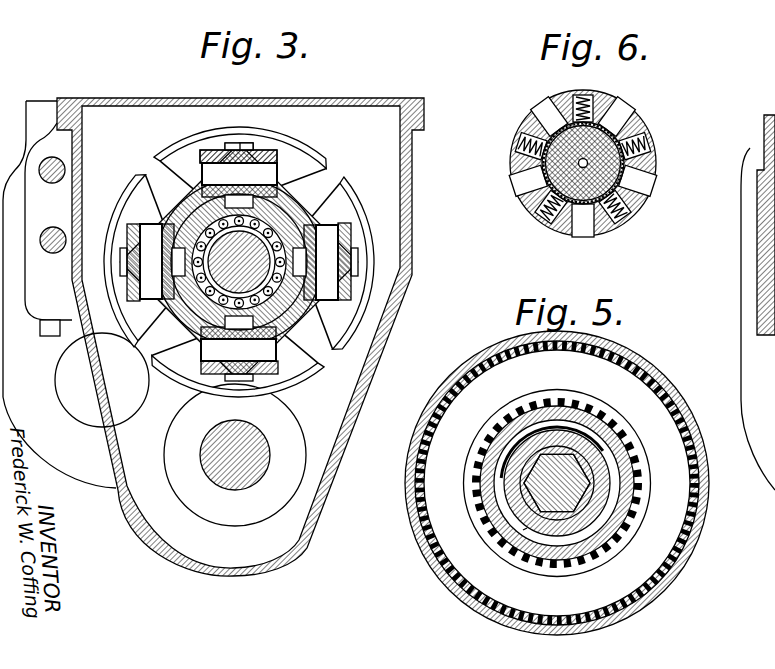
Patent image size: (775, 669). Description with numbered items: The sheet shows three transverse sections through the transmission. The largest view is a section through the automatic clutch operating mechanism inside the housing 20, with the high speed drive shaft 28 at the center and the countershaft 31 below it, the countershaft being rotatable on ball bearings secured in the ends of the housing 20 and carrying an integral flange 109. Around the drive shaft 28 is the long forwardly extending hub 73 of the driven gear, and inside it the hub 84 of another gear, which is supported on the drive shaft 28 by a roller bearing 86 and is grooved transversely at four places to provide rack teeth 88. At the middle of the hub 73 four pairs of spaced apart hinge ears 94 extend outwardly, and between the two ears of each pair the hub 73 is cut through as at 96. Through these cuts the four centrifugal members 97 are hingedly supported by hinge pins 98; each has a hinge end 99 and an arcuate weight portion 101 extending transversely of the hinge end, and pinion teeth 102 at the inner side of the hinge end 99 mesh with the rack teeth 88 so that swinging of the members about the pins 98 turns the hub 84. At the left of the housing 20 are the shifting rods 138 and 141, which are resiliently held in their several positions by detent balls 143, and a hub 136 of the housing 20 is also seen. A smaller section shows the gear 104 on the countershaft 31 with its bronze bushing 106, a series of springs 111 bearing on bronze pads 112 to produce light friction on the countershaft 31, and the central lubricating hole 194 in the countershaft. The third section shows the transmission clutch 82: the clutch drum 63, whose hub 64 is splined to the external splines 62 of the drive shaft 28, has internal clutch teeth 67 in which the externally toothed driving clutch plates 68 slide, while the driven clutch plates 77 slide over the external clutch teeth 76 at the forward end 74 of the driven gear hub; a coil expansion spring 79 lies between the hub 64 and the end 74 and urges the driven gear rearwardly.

In FIG. 3, the housing 20 is at (415, 155).
In FIG. 3, the high speed drive shaft 28 is at (270, 173).
In FIG. 5, the high speed drive shaft 28 is at (600, 483).
In FIG. 3, the countershaft 31 is at (255, 442).
In FIG. 6, the countershaft 31 is at (608, 173).
In FIG. 3, the hub of the driven gear 73 is at (172, 312).
In FIG. 3, the hub of gear 83 84 is at (283, 345).
In FIG. 3, the roller bearing 86 is at (203, 197).
In FIG. 3, the rack teeth 88 is at (172, 222).
In FIG. 3, the hinge ears 94 is at (212, 150).
In FIG. 3, the cut 96 is at (198, 334).
In FIG. 3, the centrifugal member 97 is at (250, 143).
In FIG. 3, the hinge pin 98 is at (285, 166).
In FIG. 3, the hinge end 99 is at (236, 143).
In FIG. 3, the arcuate weight portion 101 is at (175, 156).
In FIG. 3, the pinion teeth 102 is at (305, 310).
In FIG. 3, the integral flange of the countershaft 109 is at (292, 487).
In FIG. 3, the hub of the housing 136 is at (80, 410).
In FIG. 3, the shifting rod 138 is at (46, 177).
In FIG. 3, the shifting rod 141 is at (47, 232).
In FIG. 3, the detent balls 143 is at (762, 147).
In FIG. 6, the gear 104 is at (603, 162).
In FIG. 6, the bronze bushing 106 is at (623, 109).
In FIG. 6, the springs 111 is at (659, 145).
In FIG. 6, the bronze pads 112 is at (545, 180).
In FIG. 6, the central hole 194 is at (547, 158).
In FIG. 5, the external splines 62 is at (590, 503).
In FIG. 5, the clutch drum 63 is at (690, 522).
In FIG. 5, the hub of the clutch drum 64 is at (523, 530).
In FIG. 5, the internal clutch teeth 67 is at (702, 488).
In FIG. 5, the driving clutch plates 68 is at (650, 555).
In FIG. 5, the forward end of the driven gear hub 74 is at (600, 545).
In FIG. 5, the external clutch teeth 76 is at (570, 560).
In FIG. 5, the driven clutch plates 77 is at (525, 560).
In FIG. 5, the coil expansion spring 79 is at (507, 515).
In FIG. 5, the transmission clutch 82 is at (662, 606).